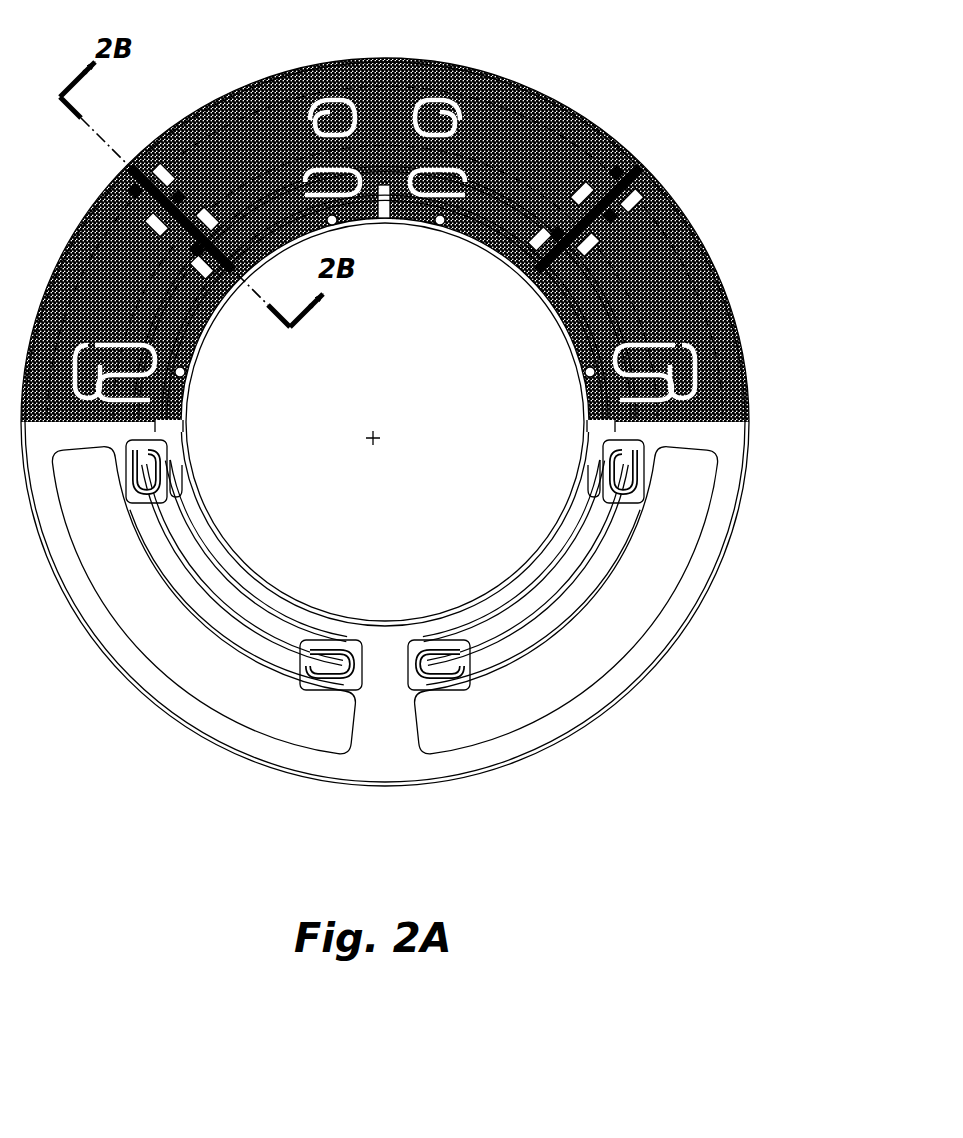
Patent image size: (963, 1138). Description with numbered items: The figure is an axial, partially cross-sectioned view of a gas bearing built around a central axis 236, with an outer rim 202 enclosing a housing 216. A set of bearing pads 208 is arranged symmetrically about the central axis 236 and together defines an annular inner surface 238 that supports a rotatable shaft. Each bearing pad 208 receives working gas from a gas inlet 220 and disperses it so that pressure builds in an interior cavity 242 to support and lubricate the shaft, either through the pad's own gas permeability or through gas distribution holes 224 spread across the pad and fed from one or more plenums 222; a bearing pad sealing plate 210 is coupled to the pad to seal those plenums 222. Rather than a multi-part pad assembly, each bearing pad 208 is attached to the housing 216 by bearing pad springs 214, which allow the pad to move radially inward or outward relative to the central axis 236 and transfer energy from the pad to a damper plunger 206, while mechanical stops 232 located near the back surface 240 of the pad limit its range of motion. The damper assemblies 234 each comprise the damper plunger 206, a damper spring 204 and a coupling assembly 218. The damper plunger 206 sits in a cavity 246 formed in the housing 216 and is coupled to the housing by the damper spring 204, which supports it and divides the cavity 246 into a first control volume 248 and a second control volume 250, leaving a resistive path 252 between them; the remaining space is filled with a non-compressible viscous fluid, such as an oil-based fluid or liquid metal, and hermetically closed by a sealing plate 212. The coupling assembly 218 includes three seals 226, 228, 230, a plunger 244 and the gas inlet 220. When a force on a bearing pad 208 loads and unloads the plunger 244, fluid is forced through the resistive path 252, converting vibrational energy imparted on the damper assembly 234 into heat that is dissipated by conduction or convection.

The outer rim 202 is at (377, 60).
The damper spring 204 is at (297, 108).
The damper plunger 206 is at (245, 150).
The bearing pad 208 is at (213, 325).
The bearing pad sealing plate 210 is at (255, 585).
The sealing plate 212 is at (215, 705).
The bearing pad spring 214 is at (425, 662).
The housing 216 is at (190, 338).
The coupling assembly 218 is at (622, 135).
The gas inlet 220 is at (640, 178).
The plenum 222 is at (640, 258).
The gas distribution holes 224 is at (603, 237).
The seal 226 is at (678, 212).
The seal 228 is at (660, 240).
The seal 230 is at (650, 248).
The mechanical stop 232 is at (382, 188).
The damper assembly 234 is at (725, 315).
The central axis 236 is at (378, 441).
The annular inner surface 238 is at (250, 508).
The back surface 240 is at (380, 218).
The interior cavity 242 is at (388, 393).
The plunger 244 is at (553, 193).
The cavity 246 is at (515, 133).
The first control volume 248 is at (560, 140).
The second control volume 250 is at (500, 168).
The resistive path 252 is at (472, 108).